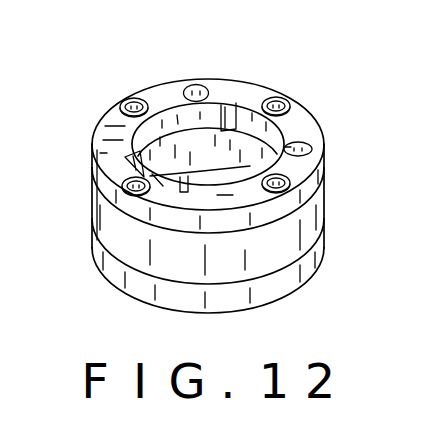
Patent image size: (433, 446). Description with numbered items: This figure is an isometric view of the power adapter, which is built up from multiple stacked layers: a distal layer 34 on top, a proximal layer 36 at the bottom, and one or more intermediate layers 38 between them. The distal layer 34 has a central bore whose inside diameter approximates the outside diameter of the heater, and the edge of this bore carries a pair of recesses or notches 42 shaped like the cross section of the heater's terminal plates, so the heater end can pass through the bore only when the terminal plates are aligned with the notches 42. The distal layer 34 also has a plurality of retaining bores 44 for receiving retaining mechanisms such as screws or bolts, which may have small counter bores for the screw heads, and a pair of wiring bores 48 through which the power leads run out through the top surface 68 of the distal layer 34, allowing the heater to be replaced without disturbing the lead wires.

The distal layer 34 is at (96, 182).
The proximal layer 36 is at (125, 278).
The intermediate layer 38 is at (117, 226).
The notch 42 is at (233, 106).
The retaining bore 44 is at (279, 98).
The wiring bore 48 is at (197, 84).
The top surface 68 is at (166, 84).